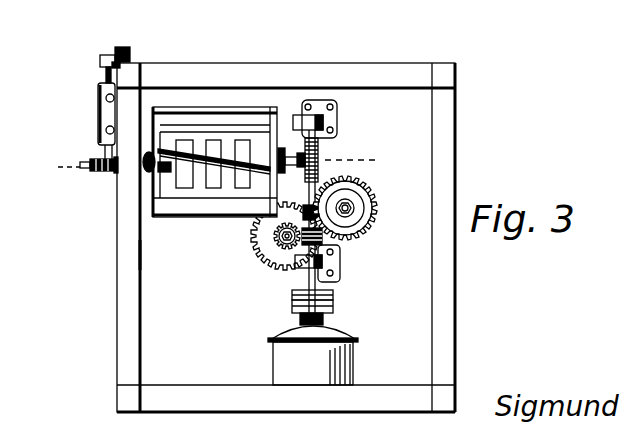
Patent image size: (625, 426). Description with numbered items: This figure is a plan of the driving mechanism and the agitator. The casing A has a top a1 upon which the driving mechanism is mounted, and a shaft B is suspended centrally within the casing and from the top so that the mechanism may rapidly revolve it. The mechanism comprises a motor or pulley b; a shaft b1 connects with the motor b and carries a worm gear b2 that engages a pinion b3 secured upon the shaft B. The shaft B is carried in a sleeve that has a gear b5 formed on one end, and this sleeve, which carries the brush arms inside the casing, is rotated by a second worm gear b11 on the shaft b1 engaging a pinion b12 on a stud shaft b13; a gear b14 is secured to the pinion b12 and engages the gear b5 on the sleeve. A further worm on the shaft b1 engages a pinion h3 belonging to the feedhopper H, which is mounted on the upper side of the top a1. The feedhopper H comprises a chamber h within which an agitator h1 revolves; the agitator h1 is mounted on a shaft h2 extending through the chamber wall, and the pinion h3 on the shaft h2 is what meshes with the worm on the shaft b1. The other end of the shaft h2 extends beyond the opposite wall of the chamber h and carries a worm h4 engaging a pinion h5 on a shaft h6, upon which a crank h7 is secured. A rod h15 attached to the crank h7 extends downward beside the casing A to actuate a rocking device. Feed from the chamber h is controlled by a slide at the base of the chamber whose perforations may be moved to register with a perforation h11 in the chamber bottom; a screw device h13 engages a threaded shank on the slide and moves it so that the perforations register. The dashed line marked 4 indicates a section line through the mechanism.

The casing A is at (128, 235).
The top a1 is at (147, 255).
The shaft B is at (277, 240).
The feedhopper H is at (152, 113).
The chamber h is at (202, 127).
The agitator h1 is at (213, 160).
The shaft h2 is at (230, 157).
The perforation h11 is at (245, 147).
The pinion h3 is at (302, 140).
The worm h4 is at (105, 175).
The pinion h5 is at (93, 173).
The shaft h6 is at (103, 70).
The crank h7 is at (109, 60).
The screw device h13 is at (88, 160).
The rod h15 is at (128, 50).
The section line 4 is at (216, 166).
The motor or pulley b is at (327, 358).
The shaft b1 is at (320, 288).
The worm gear b2 is at (323, 233).
The pinion b3 is at (275, 235).
The gear b5 is at (283, 257).
The worm gear b11 is at (310, 208).
The pinion b12 is at (362, 203).
The stud shaft b13 is at (356, 210).
The gear b14 is at (373, 223).